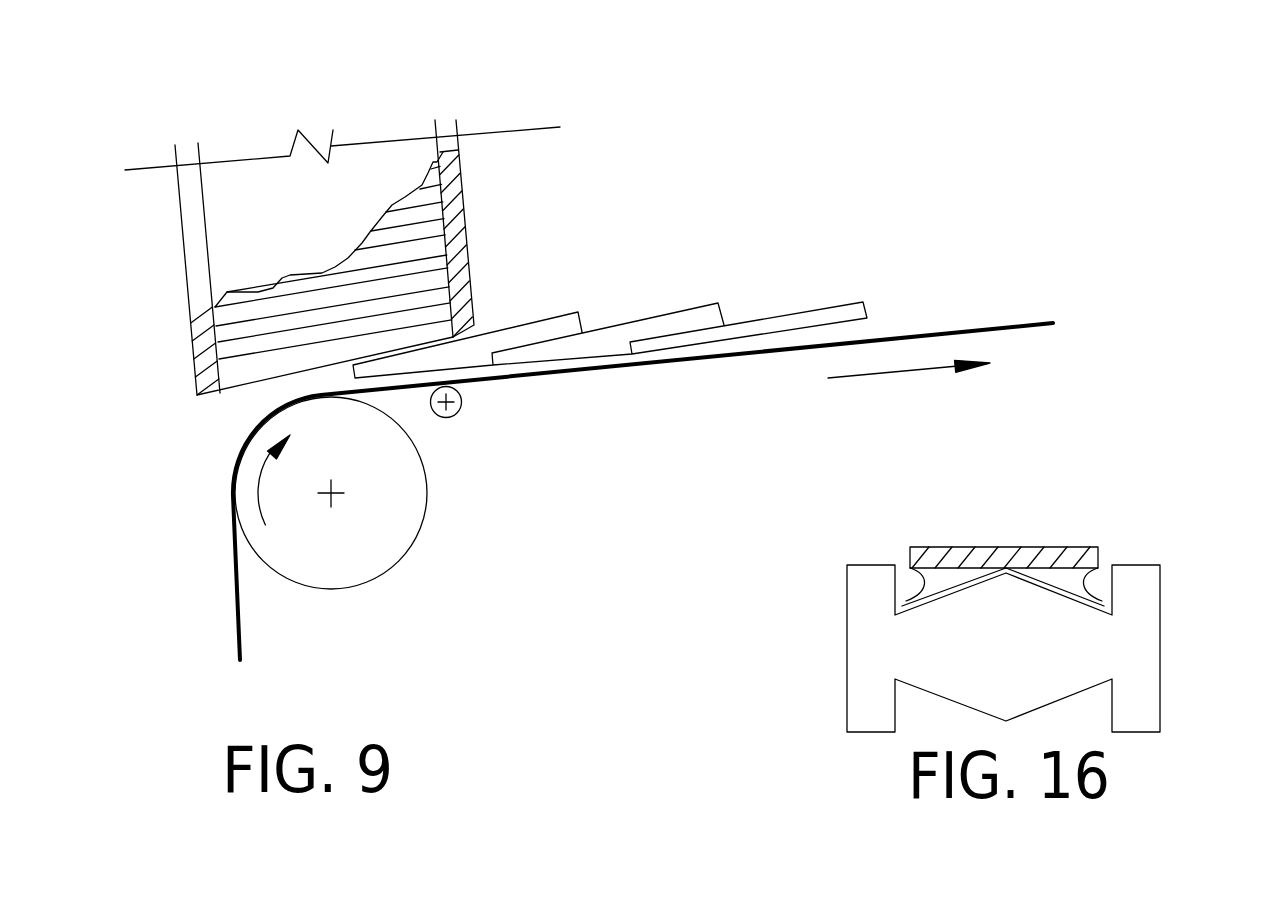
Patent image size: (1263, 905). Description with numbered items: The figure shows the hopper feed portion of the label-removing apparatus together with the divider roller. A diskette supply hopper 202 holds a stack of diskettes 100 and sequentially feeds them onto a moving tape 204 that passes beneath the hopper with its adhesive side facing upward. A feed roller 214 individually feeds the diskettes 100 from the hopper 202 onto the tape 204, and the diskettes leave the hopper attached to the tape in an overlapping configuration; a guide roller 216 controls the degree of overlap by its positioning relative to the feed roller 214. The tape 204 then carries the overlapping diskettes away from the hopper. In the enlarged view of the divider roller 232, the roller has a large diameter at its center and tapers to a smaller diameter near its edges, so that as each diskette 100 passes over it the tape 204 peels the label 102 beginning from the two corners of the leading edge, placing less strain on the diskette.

In FIG. 9, the diskette 100 is at (472, 248).
In FIG. 16, the diskette 100 is at (987, 553).
In FIG. 16, the label 102 is at (1070, 578).
In FIG. 9, the diskette supply hopper 202 is at (461, 193).
In FIG. 9, the tape 204 is at (940, 332).
In FIG. 16, the tape 204 is at (908, 593).
In FIG. 9, the feed roller 214 is at (357, 557).
In FIG. 9, the guide roller 216 is at (458, 412).
In FIG. 16, the divider roller 232 is at (943, 637).